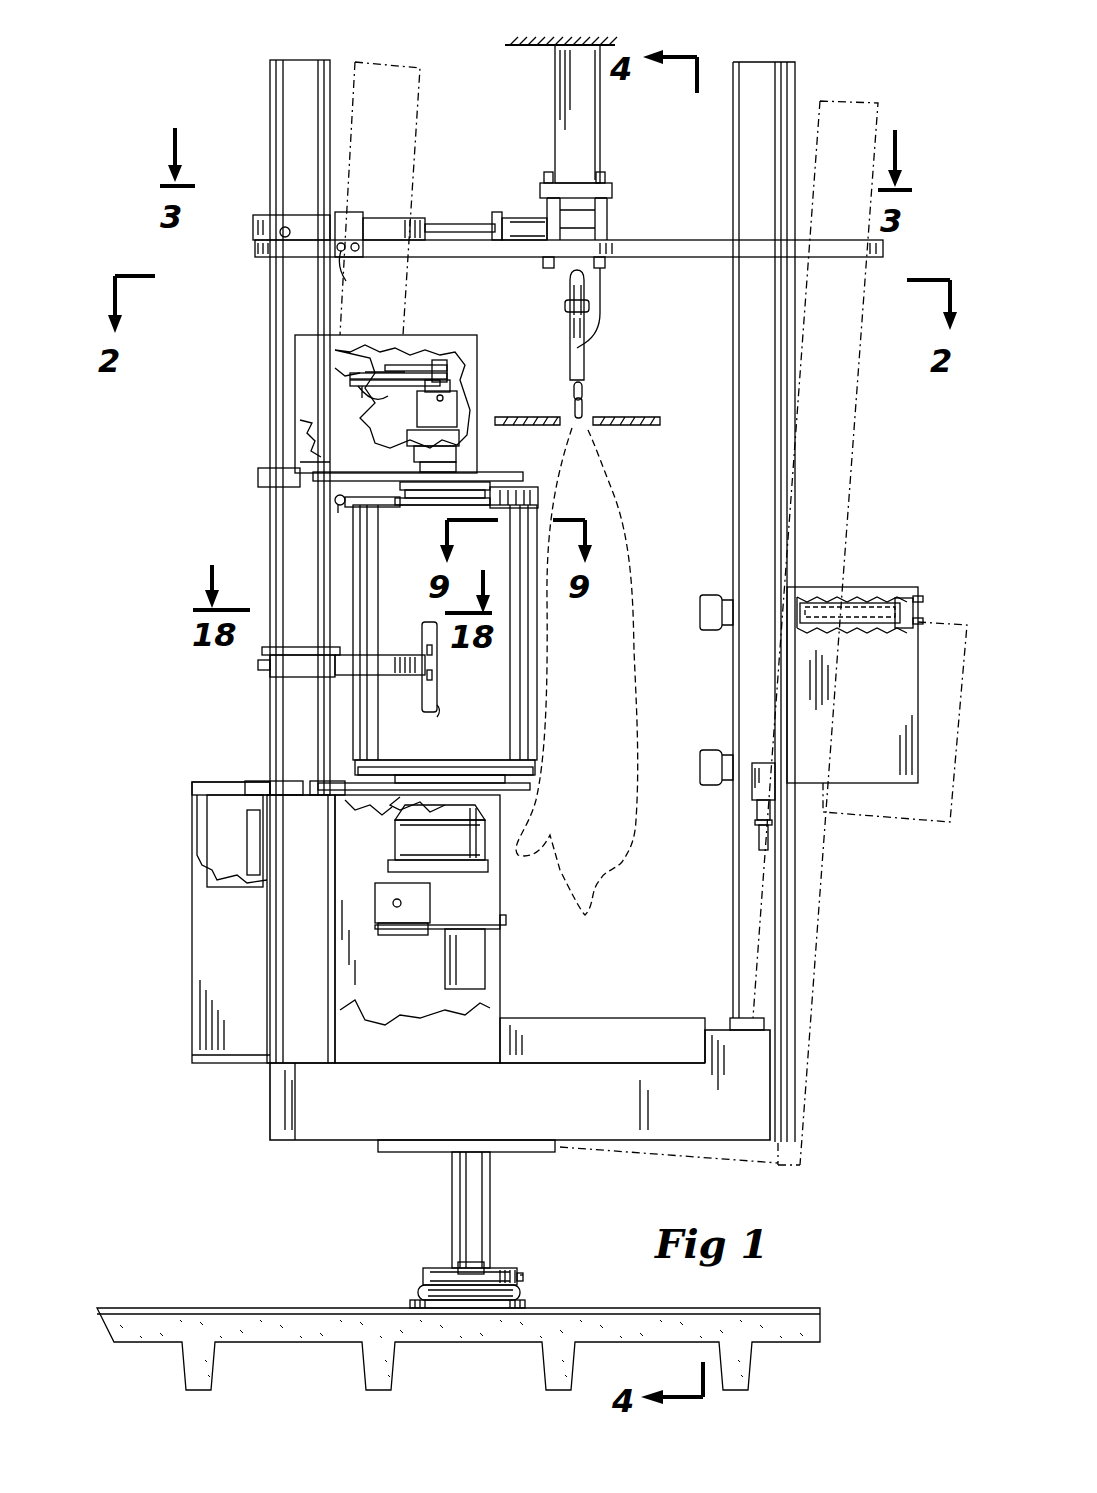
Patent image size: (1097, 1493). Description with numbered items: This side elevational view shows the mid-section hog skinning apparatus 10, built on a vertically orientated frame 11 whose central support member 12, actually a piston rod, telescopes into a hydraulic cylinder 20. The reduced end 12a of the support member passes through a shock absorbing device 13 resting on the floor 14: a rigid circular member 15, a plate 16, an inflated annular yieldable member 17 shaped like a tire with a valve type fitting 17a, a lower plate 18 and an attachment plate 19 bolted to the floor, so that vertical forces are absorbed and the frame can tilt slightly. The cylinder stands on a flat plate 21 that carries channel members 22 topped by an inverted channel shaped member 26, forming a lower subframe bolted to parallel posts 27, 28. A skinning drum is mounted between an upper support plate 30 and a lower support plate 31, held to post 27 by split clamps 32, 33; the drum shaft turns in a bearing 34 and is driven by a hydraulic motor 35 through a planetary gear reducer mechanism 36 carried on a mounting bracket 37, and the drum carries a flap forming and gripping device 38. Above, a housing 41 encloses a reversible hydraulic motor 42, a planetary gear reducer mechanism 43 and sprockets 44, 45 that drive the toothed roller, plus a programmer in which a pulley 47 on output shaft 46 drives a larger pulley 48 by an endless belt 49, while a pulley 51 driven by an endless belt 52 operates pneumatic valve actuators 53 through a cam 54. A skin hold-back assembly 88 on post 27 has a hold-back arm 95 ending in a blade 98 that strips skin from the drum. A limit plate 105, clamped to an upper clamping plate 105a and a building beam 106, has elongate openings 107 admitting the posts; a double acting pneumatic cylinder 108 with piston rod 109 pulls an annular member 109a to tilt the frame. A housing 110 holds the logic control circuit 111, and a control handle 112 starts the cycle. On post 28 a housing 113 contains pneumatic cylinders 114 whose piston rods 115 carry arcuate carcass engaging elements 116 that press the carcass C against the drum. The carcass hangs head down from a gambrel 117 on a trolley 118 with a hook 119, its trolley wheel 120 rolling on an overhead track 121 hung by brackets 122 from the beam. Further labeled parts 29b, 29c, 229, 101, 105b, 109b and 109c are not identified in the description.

The mid-section skinning apparatus 10 is at (230, 119).
The frame 11 is at (256, 1117).
The central support member 12 is at (452, 1178).
The reduced end 12a is at (485, 1275).
The shock absorbing device 13 is at (494, 1260).
The rigid horizontal support surface 14 is at (268, 1298).
The rigid circular member 15 is at (440, 1268).
The plate 16 is at (522, 1280).
The inflated annular yieldable member 17 is at (522, 1296).
The valve type fitting 17a is at (518, 1282).
The lower plate 18 is at (432, 1294).
The attachment plate 19 is at (412, 1305).
The hydraulic cylinder 20 is at (455, 967).
The horizontal plate 21 is at (380, 1150).
The channel members 22 is at (640, 1107).
The inverted channel shaped member 26 is at (660, 1017).
The post 27 is at (325, 60).
The post 28 is at (750, 62).
The ring 29b is at (535, 780).
The ring 29c is at (530, 762).
The cylinder 229 is at (540, 519).
The upper support plate 30 is at (520, 478).
The lower support plate 31 is at (335, 793).
The split clamp 32 is at (258, 478).
The split clamp 33 is at (275, 782).
The bearing 34 is at (405, 755).
The hydraulic motor 35 is at (393, 930).
The planetary gear reducer mechanism 36 is at (478, 852).
The mounting bracket 37 is at (380, 800).
The flap forming and gripping device 38 is at (542, 498).
The housing 41 is at (305, 407).
The reversible hydraulic motor 42 is at (460, 412).
The planetary gear reducer mechanism 43 is at (455, 440).
The sprocket 44 is at (345, 493).
The sprocket 45 is at (538, 483).
The output shaft 46 is at (452, 388).
The pulley 47 is at (455, 368).
The larger pulley 48 is at (407, 372).
The endless belt 49 is at (437, 365).
The pulley 51 is at (367, 372).
The endless belt 52 is at (332, 363).
The pneumatic valve actuators 53 is at (364, 409).
The cam 54 is at (350, 383).
The skin hold-back assembly 88 is at (446, 668).
The hold-back arm 95 is at (407, 652).
The blade 98 is at (438, 705).
The bracket 101 is at (260, 665).
The limit plate 105 is at (650, 242).
The upper clamping plate 105a is at (605, 191).
The post 105b is at (565, 183).
The beam 106 is at (590, 212).
The elongate openings 107 is at (258, 232).
The double acting pneumatic cylinder 108 is at (512, 218).
The piston rod 109 is at (445, 218).
The annular member 109a is at (262, 214).
The block 109b is at (352, 212).
The link 109c is at (345, 250).
The housing 110 is at (190, 947).
The logic control circuit 111 is at (207, 805).
The control handle 112 is at (752, 830).
The housing 113 is at (922, 620).
The pneumatic cylinders 114 is at (858, 600).
The piston rod 115 is at (850, 624).
The arcuate carcass engaging element 116 is at (710, 630).
The gambrel 117 is at (596, 414).
The trolley 118 is at (604, 336).
The hook 119 is at (588, 392).
The trolley wheel 120 is at (568, 290).
The overhead track 121 is at (572, 338).
The brackets 122 is at (603, 286).
The hog carcass C is at (636, 553).